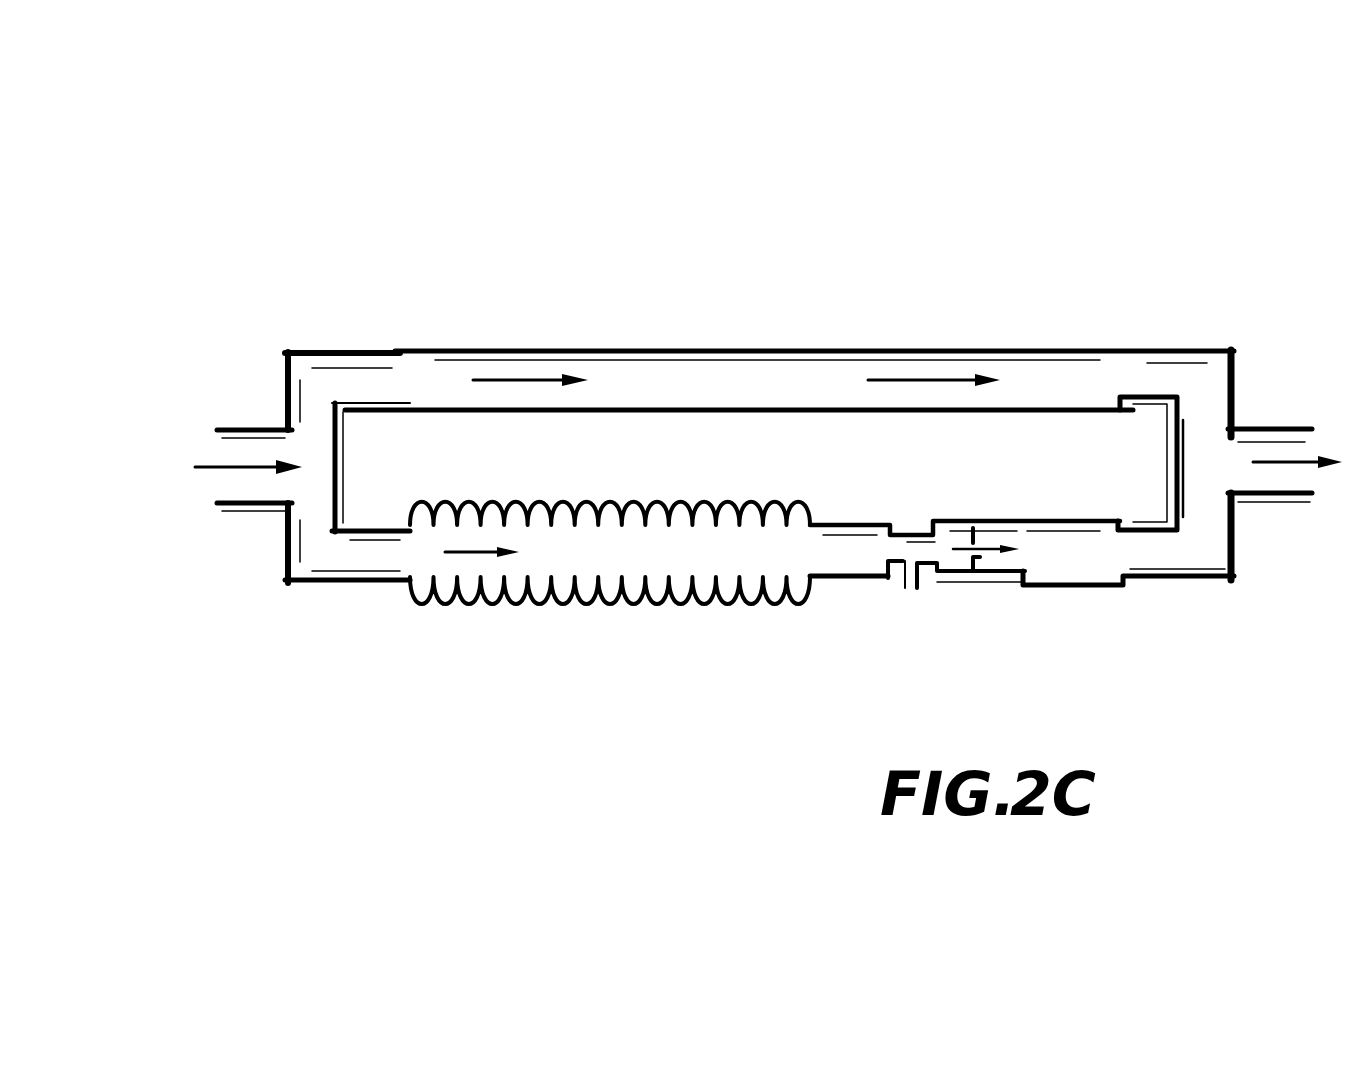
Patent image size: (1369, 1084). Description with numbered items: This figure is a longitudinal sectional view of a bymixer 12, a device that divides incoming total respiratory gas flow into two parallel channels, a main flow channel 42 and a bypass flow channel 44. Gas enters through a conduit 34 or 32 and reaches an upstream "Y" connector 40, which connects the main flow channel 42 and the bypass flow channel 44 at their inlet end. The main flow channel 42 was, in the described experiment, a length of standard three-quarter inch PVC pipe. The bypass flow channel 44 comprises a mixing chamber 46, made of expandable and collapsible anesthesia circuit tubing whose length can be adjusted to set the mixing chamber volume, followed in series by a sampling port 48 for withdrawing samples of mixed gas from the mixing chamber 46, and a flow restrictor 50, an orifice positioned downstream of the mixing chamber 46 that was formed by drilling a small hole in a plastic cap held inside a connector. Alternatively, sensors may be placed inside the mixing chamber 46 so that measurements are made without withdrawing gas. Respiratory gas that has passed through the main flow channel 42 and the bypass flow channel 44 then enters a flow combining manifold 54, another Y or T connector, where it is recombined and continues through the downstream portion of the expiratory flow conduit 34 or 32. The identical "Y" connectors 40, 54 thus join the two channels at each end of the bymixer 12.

The bymixer 12 is at (295, 305).
The main flow channel 42 is at (816, 322).
The "Y" connector 40 is at (312, 450).
The mixing chamber 46 is at (580, 548).
The bypass flow channel 44 is at (730, 628).
The sampling port 48 is at (908, 590).
The flow restrictor 50 is at (983, 583).
The flow combining manifold 54 is at (1207, 477).
The expiratory flow conduit 34 is at (223, 510).
The outlet/inlet conduit (34 or 32) 32 is at (1280, 418).